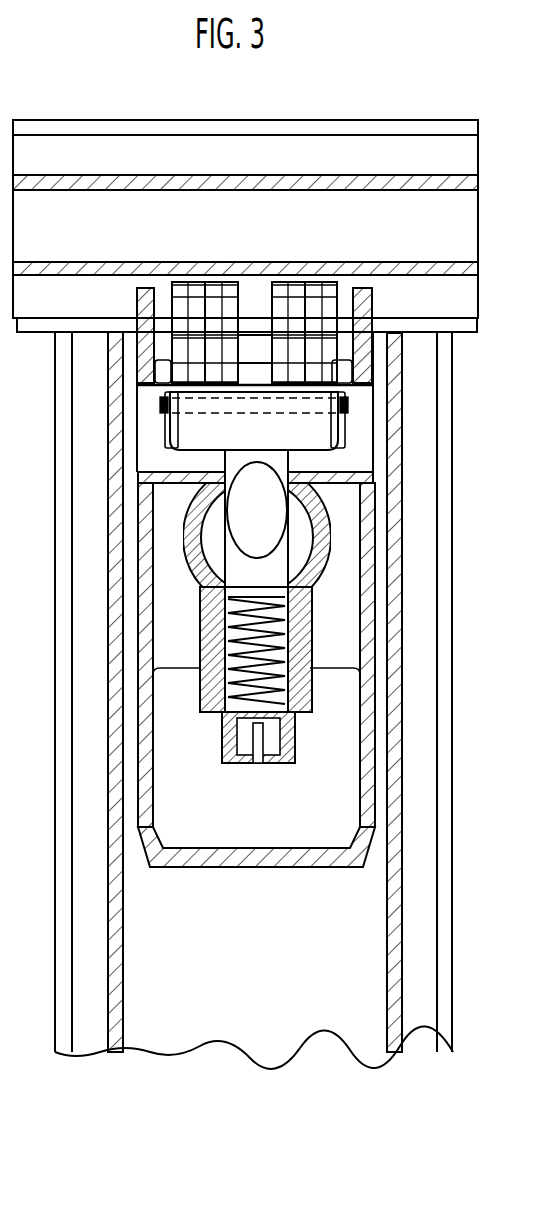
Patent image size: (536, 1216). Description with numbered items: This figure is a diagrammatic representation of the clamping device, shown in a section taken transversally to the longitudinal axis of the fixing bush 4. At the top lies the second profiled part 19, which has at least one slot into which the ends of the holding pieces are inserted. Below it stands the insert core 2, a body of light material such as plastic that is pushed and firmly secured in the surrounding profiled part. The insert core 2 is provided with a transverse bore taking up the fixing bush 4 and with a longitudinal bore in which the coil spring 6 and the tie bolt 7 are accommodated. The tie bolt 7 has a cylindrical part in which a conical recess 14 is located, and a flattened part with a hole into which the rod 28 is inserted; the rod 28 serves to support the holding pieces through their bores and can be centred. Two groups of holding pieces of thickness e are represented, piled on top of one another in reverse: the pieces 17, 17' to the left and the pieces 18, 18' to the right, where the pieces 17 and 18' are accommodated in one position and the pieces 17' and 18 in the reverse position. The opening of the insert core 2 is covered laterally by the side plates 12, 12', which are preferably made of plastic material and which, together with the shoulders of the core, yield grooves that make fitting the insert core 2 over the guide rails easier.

The second profiled part 19 is at (113, 121).
The side plate 12 is at (133, 305).
The side plate 12' is at (374, 305).
The holding piece 17 is at (221, 305).
The holding piece 17' is at (192, 305).
The holding piece 18 is at (288, 305).
The holding piece 18' is at (316, 305).
The tie bolt 7 is at (249, 368).
The rod 28 is at (162, 406).
The conical recess 14 is at (243, 515).
The fixing bush 4 is at (197, 563).
The coil spring 6 is at (205, 658).
The insert core 2 is at (180, 802).